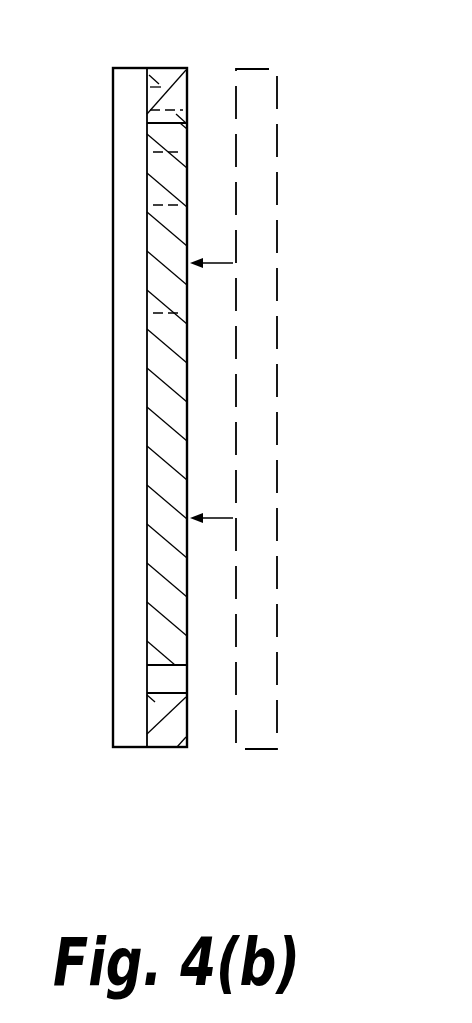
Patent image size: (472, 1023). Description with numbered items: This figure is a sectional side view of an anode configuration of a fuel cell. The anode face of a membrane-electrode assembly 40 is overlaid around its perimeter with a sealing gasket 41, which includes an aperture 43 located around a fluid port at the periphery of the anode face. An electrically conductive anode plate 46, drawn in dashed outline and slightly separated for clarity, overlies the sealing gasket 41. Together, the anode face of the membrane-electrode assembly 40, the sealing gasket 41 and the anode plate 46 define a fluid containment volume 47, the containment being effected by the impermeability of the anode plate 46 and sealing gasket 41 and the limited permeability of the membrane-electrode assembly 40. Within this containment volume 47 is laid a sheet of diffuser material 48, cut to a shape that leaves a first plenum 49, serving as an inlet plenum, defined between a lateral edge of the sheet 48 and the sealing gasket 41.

The membrane-electrode assembly 40 is at (130, 82).
The sealing gasket 41 is at (165, 730).
The aperture 43 is at (176, 70).
The anode plate 46 is at (266, 196).
The fluid containment volume 47 is at (165, 546).
The sheet of diffuser material 48 is at (157, 467).
The first plenum 49 is at (157, 678).